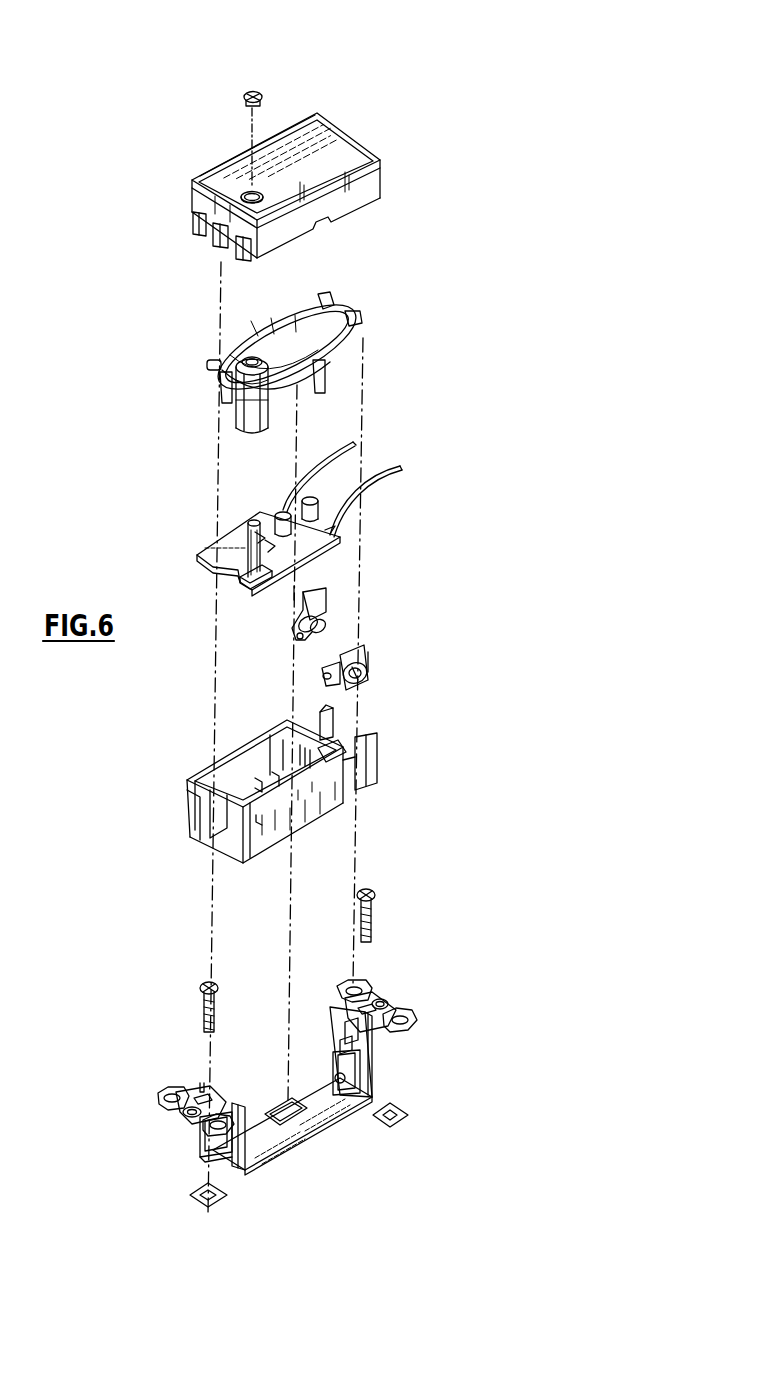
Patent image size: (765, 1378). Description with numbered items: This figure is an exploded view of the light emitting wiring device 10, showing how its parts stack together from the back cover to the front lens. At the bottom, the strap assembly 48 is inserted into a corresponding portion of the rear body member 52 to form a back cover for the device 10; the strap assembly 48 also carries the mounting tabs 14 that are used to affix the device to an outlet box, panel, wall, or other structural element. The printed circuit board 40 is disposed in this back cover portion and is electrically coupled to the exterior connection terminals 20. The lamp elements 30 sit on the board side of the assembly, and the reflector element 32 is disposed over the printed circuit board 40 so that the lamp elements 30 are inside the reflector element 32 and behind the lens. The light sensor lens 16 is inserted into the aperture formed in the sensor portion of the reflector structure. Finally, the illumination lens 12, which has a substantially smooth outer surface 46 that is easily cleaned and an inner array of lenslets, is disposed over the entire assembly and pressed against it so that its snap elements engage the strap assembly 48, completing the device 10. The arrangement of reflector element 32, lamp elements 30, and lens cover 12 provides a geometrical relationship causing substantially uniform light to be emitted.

The light emitting wiring device 10 is at (356, 42).
The illumination lens 12 is at (347, 103).
The mounting tabs 14 is at (385, 1001).
The sensor lens 16 is at (238, 88).
The exterior connection terminals 20 is at (312, 584).
The lamp elements 30 is at (280, 510).
The reflector element 32 is at (372, 326).
The printed circuit board 40 is at (222, 540).
The outer surface 46 is at (308, 132).
The strap assembly 48 is at (314, 1153).
The rear body member 52 is at (213, 773).